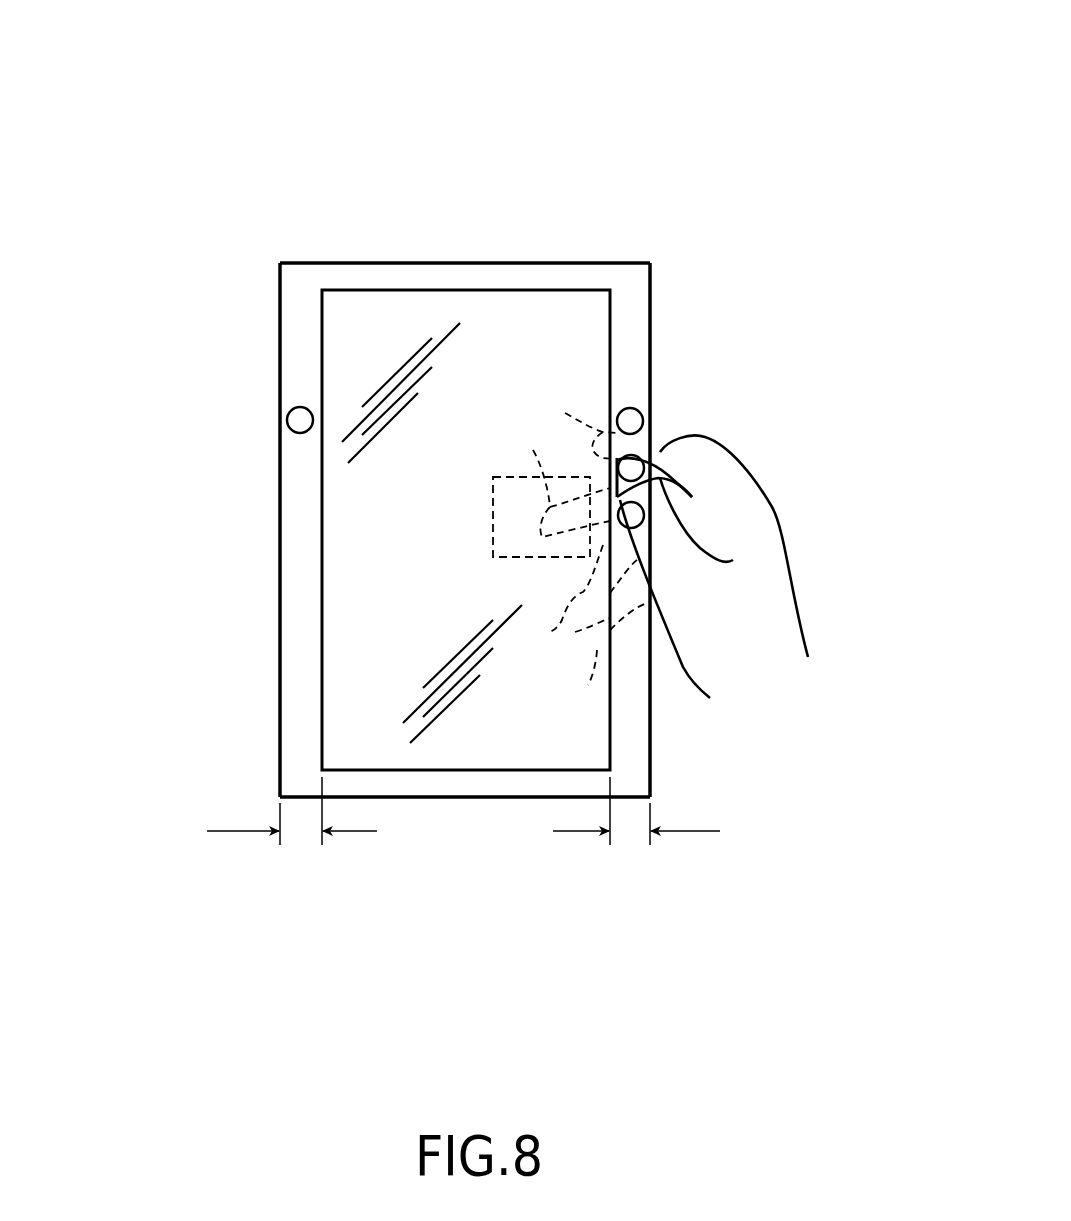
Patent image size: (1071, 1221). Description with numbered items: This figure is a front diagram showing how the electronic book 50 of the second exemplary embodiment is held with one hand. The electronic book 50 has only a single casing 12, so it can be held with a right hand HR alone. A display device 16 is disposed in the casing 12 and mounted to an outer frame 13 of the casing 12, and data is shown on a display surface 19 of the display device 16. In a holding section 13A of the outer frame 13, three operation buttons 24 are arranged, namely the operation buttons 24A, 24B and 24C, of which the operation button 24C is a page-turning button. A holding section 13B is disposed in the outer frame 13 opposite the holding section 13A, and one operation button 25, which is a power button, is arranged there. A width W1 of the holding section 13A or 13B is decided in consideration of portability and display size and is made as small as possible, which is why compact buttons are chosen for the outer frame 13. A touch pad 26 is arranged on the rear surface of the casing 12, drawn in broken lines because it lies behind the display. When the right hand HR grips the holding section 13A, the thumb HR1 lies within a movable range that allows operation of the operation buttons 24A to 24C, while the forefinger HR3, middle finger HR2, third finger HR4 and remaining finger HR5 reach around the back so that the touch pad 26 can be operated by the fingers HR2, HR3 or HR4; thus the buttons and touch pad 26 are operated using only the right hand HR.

The electronic book 50 is at (445, 133).
The casing 12 is at (465, 865).
The outer frame 13 is at (597, 283).
The holding section 13A is at (630, 703).
The holding section 13B is at (295, 325).
The display device 16 is at (320, 677).
The display surface 19 is at (340, 570).
The operation button 24 is at (755, 305).
The operation button 24A is at (645, 417).
The operation button 24B is at (640, 462).
The operation button 24C is at (643, 508).
The operation button 25 is at (296, 426).
The touch pad 26 is at (523, 557).
The width of the holding section W1 is at (463, 811).
The right hand HR is at (772, 653).
The thumb HR1 is at (672, 530).
The middle finger HR2 is at (558, 479).
The forefinger HR3 is at (569, 423).
The third finger HR4 is at (587, 600).
The finger HR5 is at (596, 657).